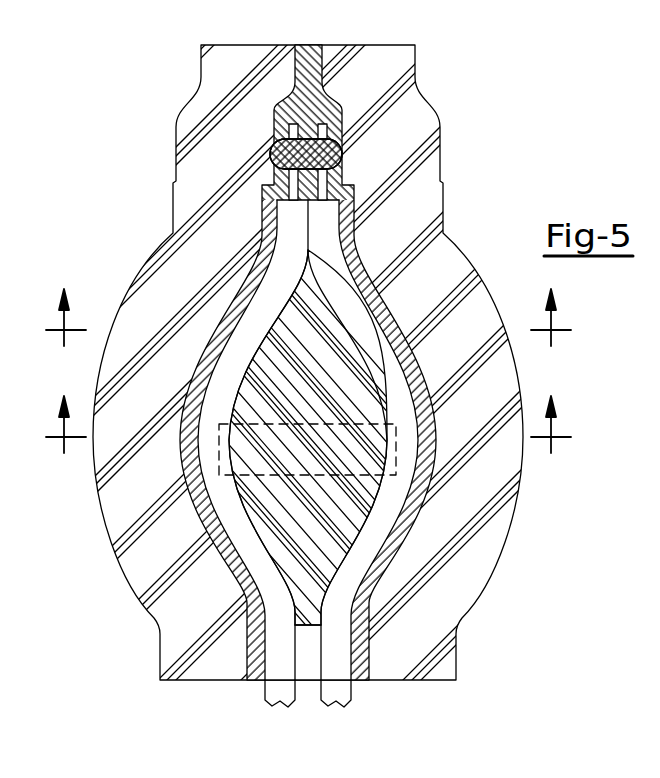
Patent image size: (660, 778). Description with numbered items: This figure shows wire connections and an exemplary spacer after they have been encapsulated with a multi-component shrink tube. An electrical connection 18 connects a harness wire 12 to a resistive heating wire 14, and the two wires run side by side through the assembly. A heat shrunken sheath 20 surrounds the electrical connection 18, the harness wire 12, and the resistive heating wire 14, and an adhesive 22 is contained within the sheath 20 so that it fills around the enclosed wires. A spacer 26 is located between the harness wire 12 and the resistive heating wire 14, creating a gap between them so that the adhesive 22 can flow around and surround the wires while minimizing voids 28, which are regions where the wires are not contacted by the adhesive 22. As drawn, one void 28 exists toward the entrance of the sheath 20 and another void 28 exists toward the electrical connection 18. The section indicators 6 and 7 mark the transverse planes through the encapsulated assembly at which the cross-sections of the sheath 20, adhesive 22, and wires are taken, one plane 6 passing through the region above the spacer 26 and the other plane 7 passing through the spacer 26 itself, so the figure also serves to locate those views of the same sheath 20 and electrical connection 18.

The harness wire 12 is at (290, 223).
The resistive heating wire 14 is at (327, 222).
The electrical connection 18 is at (345, 152).
The sheath 20 is at (208, 143).
The adhesive 22 is at (347, 392).
The spacer 26 is at (236, 476).
The void 28 is at (310, 288).
The section line 6- 6 is at (305, 317).
The section line 7- 7 is at (305, 424).